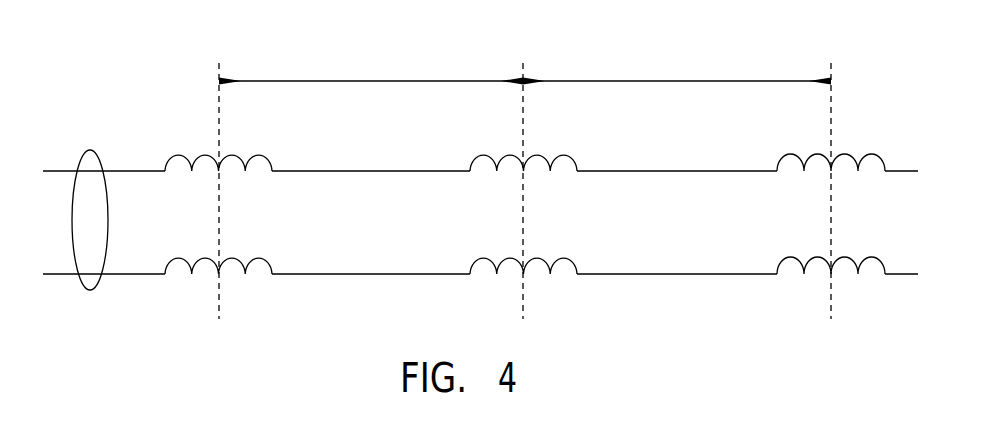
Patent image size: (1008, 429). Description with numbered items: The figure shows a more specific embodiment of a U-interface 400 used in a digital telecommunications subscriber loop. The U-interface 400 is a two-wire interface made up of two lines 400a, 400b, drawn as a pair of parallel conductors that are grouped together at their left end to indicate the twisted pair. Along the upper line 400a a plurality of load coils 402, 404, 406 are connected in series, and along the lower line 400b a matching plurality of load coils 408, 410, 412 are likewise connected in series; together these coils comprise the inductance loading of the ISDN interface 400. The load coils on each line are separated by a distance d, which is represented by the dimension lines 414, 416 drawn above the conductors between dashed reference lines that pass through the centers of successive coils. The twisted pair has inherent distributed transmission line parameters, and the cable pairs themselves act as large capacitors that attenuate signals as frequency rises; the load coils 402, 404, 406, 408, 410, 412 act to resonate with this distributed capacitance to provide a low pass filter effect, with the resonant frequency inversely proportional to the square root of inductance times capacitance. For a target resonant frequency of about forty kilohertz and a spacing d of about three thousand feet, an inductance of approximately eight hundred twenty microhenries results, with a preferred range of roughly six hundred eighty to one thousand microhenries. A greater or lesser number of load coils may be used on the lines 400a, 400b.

The U-interface 400 is at (98, 157).
The line 400a is at (127, 171).
The line 400b is at (132, 274).
The load coil 402 is at (257, 157).
The load coil 404 is at (558, 155).
The load coil 406 is at (867, 155).
The load coil 408 is at (257, 258).
The load coil 410 is at (558, 257).
The load coil 412 is at (867, 257).
The dimension line 414 is at (447, 80).
The dimension line 416 is at (767, 80).